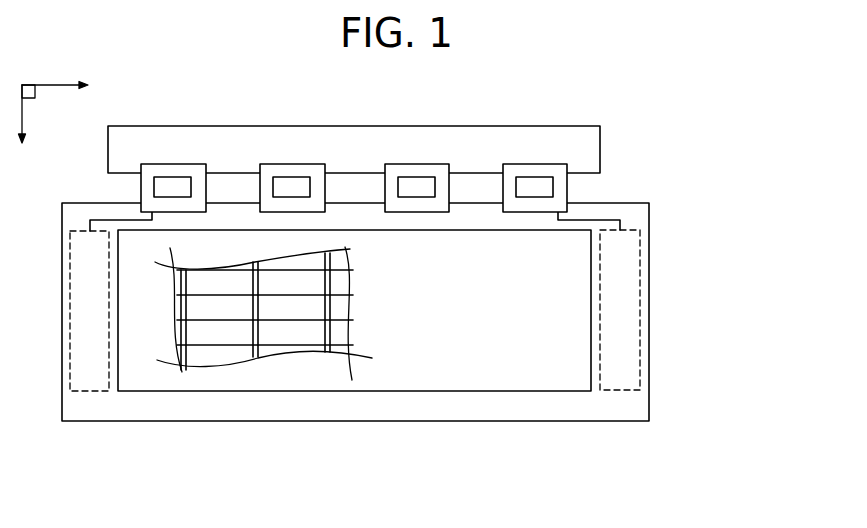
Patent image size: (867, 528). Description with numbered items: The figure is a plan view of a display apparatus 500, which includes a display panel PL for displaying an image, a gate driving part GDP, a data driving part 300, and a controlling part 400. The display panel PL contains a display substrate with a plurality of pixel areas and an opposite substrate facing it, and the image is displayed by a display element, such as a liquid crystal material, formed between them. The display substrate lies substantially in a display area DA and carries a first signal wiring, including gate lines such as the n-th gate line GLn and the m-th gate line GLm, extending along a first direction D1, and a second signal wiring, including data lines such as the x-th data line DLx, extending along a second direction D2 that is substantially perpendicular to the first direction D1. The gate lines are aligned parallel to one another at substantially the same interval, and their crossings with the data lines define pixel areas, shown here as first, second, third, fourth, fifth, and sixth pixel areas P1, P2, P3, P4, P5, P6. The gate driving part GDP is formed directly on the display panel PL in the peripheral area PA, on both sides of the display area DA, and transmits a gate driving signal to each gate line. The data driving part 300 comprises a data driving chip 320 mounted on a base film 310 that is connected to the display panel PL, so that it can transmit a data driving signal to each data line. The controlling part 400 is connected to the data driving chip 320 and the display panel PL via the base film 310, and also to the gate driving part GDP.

The display apparatus 500 is at (375, 109).
The controlling part 400 is at (583, 142).
The data driving part 300 is at (448, 181).
The base film 310 is at (562, 168).
The data driving chip 320 is at (547, 188).
The display panel PL is at (628, 405).
The display area DA is at (550, 323).
The peripheral area PA is at (550, 418).
The gate driving part GDP is at (628, 312).
The m-th gate line GLm is at (353, 270).
The n-th gate line GLn is at (353, 295).
The x-th data line DLx is at (187, 352).
The first pixel area P1 is at (219, 285).
The second pixel area P2 is at (219, 310).
The third pixel area P3 is at (291, 285).
The fourth pixel area P4 is at (291, 310).
The fifth pixel area P5 is at (219, 335).
The sixth pixel area P6 is at (291, 335).
The first direction D1 is at (68, 85).
The second direction D2 is at (23, 125).